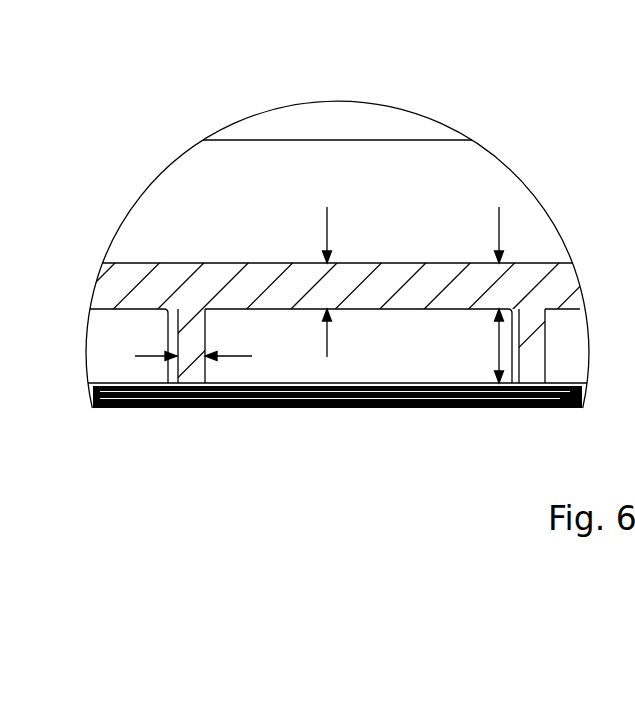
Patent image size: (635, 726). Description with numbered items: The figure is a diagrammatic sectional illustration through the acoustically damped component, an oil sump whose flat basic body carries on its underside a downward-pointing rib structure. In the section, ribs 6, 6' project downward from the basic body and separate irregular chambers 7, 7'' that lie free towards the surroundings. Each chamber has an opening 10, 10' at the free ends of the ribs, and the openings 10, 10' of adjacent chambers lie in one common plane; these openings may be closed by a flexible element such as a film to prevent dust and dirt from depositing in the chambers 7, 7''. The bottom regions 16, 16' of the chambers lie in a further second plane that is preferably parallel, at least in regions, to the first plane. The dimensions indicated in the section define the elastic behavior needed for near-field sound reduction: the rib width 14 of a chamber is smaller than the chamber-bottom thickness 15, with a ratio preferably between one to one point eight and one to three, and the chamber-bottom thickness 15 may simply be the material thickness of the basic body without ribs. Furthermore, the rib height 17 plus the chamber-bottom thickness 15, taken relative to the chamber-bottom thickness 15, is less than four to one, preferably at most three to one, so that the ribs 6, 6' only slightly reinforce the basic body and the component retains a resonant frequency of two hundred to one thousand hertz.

The rib 6 is at (195, 405).
The rib 6' is at (507, 422).
The chamber 7 is at (410, 421).
The chamber 7'' is at (121, 405).
The opening 10 is at (337, 296).
The opening 10' is at (337, 459).
The rib width 14 is at (233, 357).
The chamber-bottom thickness 15 is at (327, 235).
The bottom region 16 is at (306, 211).
The bottom region 16' is at (577, 229).
The rib height 17 is at (497, 350).